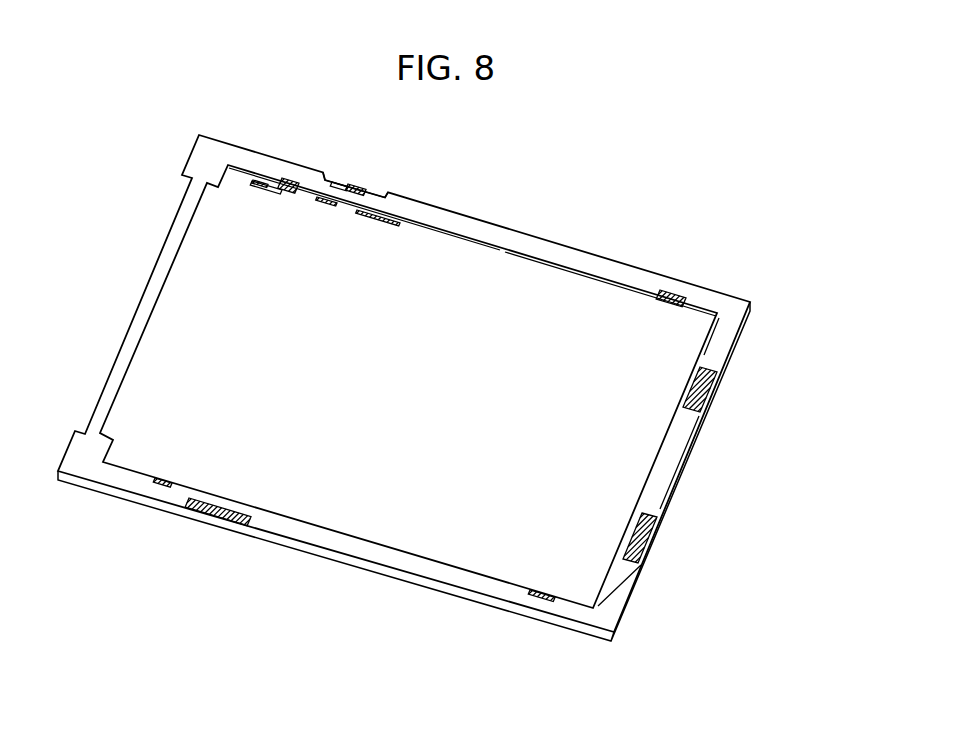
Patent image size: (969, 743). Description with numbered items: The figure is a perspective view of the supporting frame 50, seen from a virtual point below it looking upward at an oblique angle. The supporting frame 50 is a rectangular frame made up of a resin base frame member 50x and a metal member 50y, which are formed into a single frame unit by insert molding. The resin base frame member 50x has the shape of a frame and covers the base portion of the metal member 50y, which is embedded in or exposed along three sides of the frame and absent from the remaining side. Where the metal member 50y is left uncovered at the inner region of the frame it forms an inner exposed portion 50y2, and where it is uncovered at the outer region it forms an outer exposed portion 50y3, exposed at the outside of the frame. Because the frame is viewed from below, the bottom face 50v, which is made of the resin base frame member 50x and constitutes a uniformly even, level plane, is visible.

The supporting frame 50 is at (710, 128).
The bottom face 50v is at (422, 212).
The resin base frame member 50x is at (303, 550).
The metal member 50y is at (225, 517).
The inner exposed portion 50y2 is at (495, 253).
The outer exposed portion 50y3 is at (712, 395).